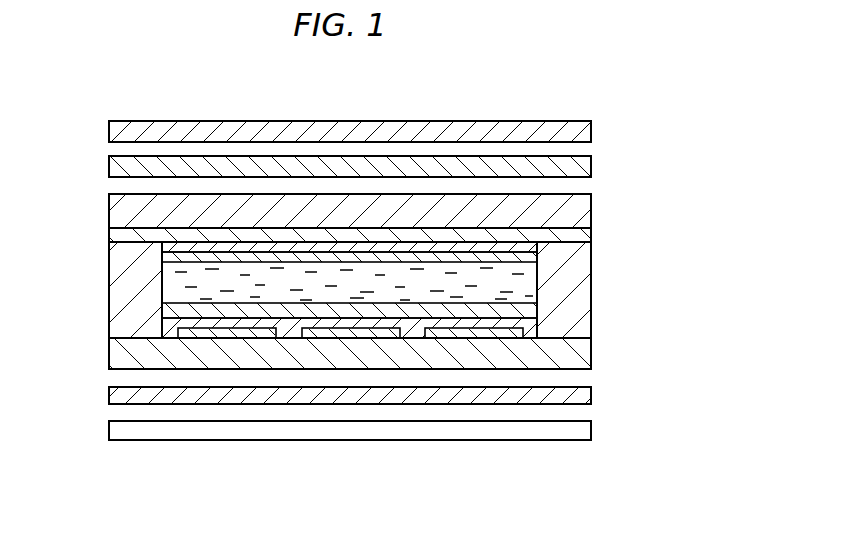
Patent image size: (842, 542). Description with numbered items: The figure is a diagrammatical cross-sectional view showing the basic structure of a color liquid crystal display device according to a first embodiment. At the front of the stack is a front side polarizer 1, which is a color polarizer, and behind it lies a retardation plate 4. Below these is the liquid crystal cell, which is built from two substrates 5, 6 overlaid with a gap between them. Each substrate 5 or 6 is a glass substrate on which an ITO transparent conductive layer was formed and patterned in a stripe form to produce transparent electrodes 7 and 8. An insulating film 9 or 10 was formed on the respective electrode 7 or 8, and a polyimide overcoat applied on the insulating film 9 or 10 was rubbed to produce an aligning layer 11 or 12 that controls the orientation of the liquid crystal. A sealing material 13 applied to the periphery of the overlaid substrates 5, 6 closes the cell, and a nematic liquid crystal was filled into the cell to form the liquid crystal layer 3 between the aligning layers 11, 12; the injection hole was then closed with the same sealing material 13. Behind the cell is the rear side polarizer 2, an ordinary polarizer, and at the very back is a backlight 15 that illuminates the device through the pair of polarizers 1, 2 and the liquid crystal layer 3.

The front side polarizer 1 is at (478, 121).
The rear side polarizer 2 is at (591, 397).
The liquid crystal layer 3 is at (173, 285).
The retardation plate 4 is at (591, 171).
The substrate 5 is at (591, 210).
The substrate 6 is at (591, 355).
The transparent electrode 7 is at (108, 235).
The transparent electrode 8 is at (223, 333).
The insulating film 9 is at (177, 255).
The insulating film 10 is at (170, 327).
The aligning layer 11 is at (530, 257).
The aligning layer 12 is at (535, 312).
The sealing material 13 is at (108, 303).
The backlight 15 is at (108, 430).